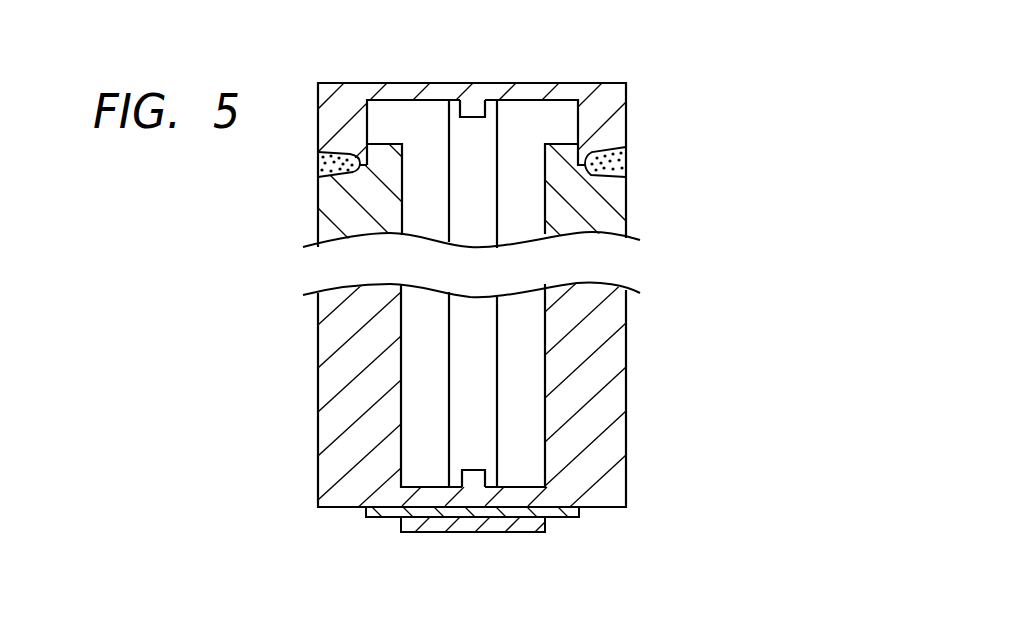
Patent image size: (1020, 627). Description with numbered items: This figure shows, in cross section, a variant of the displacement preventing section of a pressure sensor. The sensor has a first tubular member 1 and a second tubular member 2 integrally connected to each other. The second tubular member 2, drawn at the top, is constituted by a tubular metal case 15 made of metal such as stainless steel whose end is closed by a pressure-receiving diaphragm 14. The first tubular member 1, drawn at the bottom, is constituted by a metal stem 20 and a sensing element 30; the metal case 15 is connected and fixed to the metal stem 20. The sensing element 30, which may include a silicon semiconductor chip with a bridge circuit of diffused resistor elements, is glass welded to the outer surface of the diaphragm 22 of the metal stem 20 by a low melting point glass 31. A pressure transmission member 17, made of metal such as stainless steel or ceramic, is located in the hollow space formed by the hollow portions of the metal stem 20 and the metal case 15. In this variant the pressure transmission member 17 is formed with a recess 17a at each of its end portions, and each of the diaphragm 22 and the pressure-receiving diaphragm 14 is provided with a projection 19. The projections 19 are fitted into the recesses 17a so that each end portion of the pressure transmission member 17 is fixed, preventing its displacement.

The first tubular member 1 is at (529, 422).
The second tubular member 2 is at (456, 171).
The pressure-receiving diaphragm 14 is at (612, 133).
The metal case 15 is at (612, 218).
The pressure transmission member 17 is at (475, 343).
The recess 17a is at (462, 120).
The projection 19 is at (470, 104).
The metal stem 20 is at (592, 463).
The diaphragm 22 is at (492, 495).
The sensing element 30 is at (540, 525).
The low melting point glass 31 is at (367, 509).